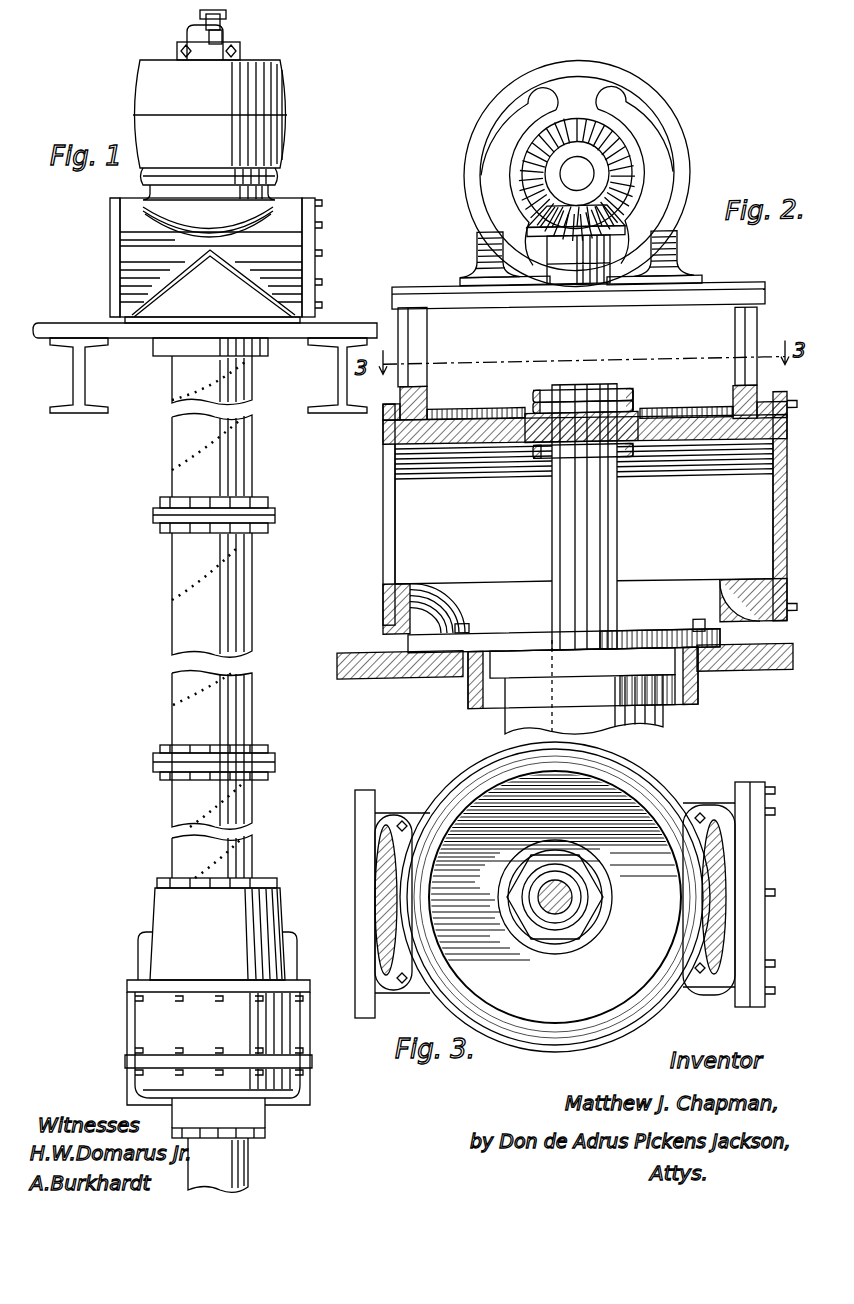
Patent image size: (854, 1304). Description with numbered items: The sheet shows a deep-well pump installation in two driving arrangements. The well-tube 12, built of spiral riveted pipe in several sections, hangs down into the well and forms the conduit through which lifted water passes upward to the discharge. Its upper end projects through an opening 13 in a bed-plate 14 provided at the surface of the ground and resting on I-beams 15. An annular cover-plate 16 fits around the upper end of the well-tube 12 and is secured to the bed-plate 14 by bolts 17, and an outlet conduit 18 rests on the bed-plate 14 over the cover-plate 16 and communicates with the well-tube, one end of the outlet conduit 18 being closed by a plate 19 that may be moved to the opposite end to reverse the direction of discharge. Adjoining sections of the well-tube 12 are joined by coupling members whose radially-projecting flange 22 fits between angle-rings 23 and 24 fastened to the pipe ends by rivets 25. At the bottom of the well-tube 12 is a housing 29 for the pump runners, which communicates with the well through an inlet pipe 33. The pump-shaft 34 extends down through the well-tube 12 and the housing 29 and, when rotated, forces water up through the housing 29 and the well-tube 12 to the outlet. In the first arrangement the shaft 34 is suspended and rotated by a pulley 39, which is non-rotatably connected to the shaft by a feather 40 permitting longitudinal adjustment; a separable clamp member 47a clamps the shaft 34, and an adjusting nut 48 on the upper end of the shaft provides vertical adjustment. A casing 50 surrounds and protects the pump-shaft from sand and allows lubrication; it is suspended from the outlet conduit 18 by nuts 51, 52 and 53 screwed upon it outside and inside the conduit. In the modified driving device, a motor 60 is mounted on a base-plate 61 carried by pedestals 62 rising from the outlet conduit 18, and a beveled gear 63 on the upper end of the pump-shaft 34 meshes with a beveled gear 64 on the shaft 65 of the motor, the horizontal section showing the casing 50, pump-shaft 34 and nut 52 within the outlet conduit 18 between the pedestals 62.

In FIG. 1, the well-tube 12 is at (185, 400).
In FIG. 2, the well-tube 12 is at (505, 727).
In FIG. 1, the opening 13 is at (210, 347).
In FIG. 2, the opening 13 is at (690, 702).
In FIG. 1, the bed-plate 14 is at (357, 322).
In FIG. 2, the bed-plate 14 is at (763, 676).
In FIG. 1, the I-beams 15 is at (100, 412).
In FIG. 2, the annular cover-plate 16 is at (650, 634).
In FIG. 2, the bolts 17 is at (462, 624).
In FIG. 1, the outlet conduit 18 is at (289, 230).
In FIG. 2, the outlet conduit 18 is at (775, 550).
In FIG. 3, the outlet conduit 18 is at (730, 785).
In FIG. 1, the plate 19 is at (320, 240).
In FIG. 2, the plate 19 is at (773, 512).
In FIG. 3, the plate 19 is at (765, 835).
In FIG. 1, the radially-projecting flange 22 is at (275, 512).
In FIG. 1, the angle-ring 23 is at (268, 530).
In FIG. 1, the angle-ring 24 is at (268, 502).
In FIG. 1, the rivets 25 is at (192, 500).
In FIG. 1, the housing 29 is at (262, 920).
In FIG. 1, the inlet pipe 33 is at (232, 1162).
In FIG. 1, the pump-shaft 34 is at (222, 16).
In FIG. 2, the pump-shaft 34 is at (590, 332).
In FIG. 3, the pump-shaft 34 is at (560, 902).
In FIG. 1, the pulley 39 is at (285, 95).
In FIG. 1, the feather 40 is at (187, 35).
In FIG. 1, the separable clamp member 47a is at (240, 50).
In FIG. 1, the adjusting nut 48 is at (224, 38).
In FIG. 2, the casing 50 is at (617, 563).
In FIG. 3, the casing 50 is at (583, 907).
In FIG. 2, the nut 51 is at (633, 405).
In FIG. 2, the nut 52 is at (600, 392).
In FIG. 3, the nut 52 is at (575, 940).
In FIG. 2, the nut 53 is at (625, 460).
In FIG. 2, the motor 60 is at (672, 148).
In FIG. 2, the base-plate 61 is at (725, 303).
In FIG. 2, the pedestals 62 is at (755, 325).
In FIG. 3, the pedestals 62 is at (386, 857).
In FIG. 2, the beveled gear 63 is at (620, 223).
In FIG. 2, the beveled gear 64 is at (607, 148).
In FIG. 2, the shaft 65 is at (590, 181).